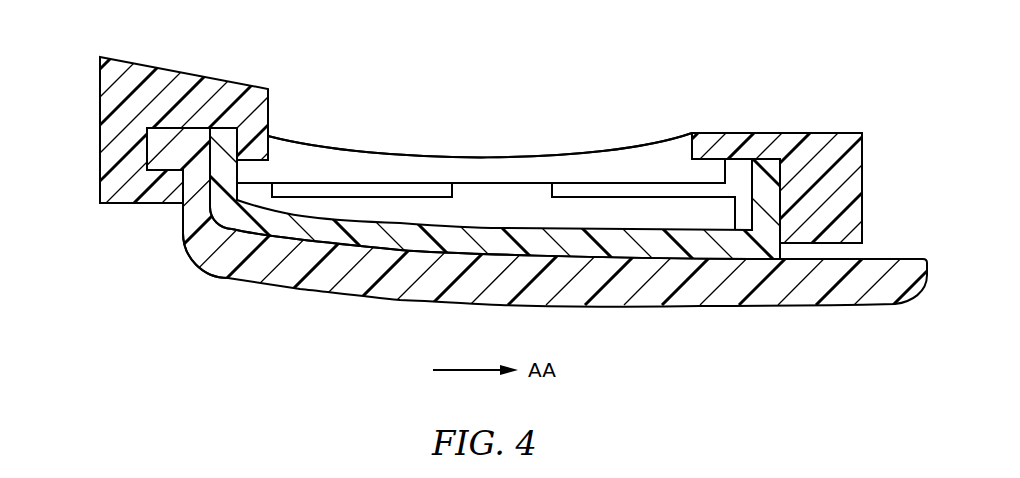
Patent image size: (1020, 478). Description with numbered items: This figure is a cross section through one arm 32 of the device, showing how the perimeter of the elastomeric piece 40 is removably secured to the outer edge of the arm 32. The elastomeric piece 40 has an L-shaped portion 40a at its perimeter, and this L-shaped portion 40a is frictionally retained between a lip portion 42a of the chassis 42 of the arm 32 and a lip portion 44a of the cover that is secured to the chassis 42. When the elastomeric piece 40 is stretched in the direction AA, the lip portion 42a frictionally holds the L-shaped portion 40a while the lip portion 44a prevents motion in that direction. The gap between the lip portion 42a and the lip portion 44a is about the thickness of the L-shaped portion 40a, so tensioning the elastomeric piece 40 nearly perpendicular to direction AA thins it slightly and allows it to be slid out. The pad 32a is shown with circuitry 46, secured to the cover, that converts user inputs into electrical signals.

The chassis 42 is at (164, 61).
The lip portion of chassis 42a is at (104, 109).
The lip portion of cover 44a is at (228, 136).
The arm 32 is at (603, 62).
The pad 32a is at (376, 140).
The circuitry 46 is at (520, 217).
The elastomeric piece 40 is at (721, 317).
The L-shaped portion 40a is at (190, 245).